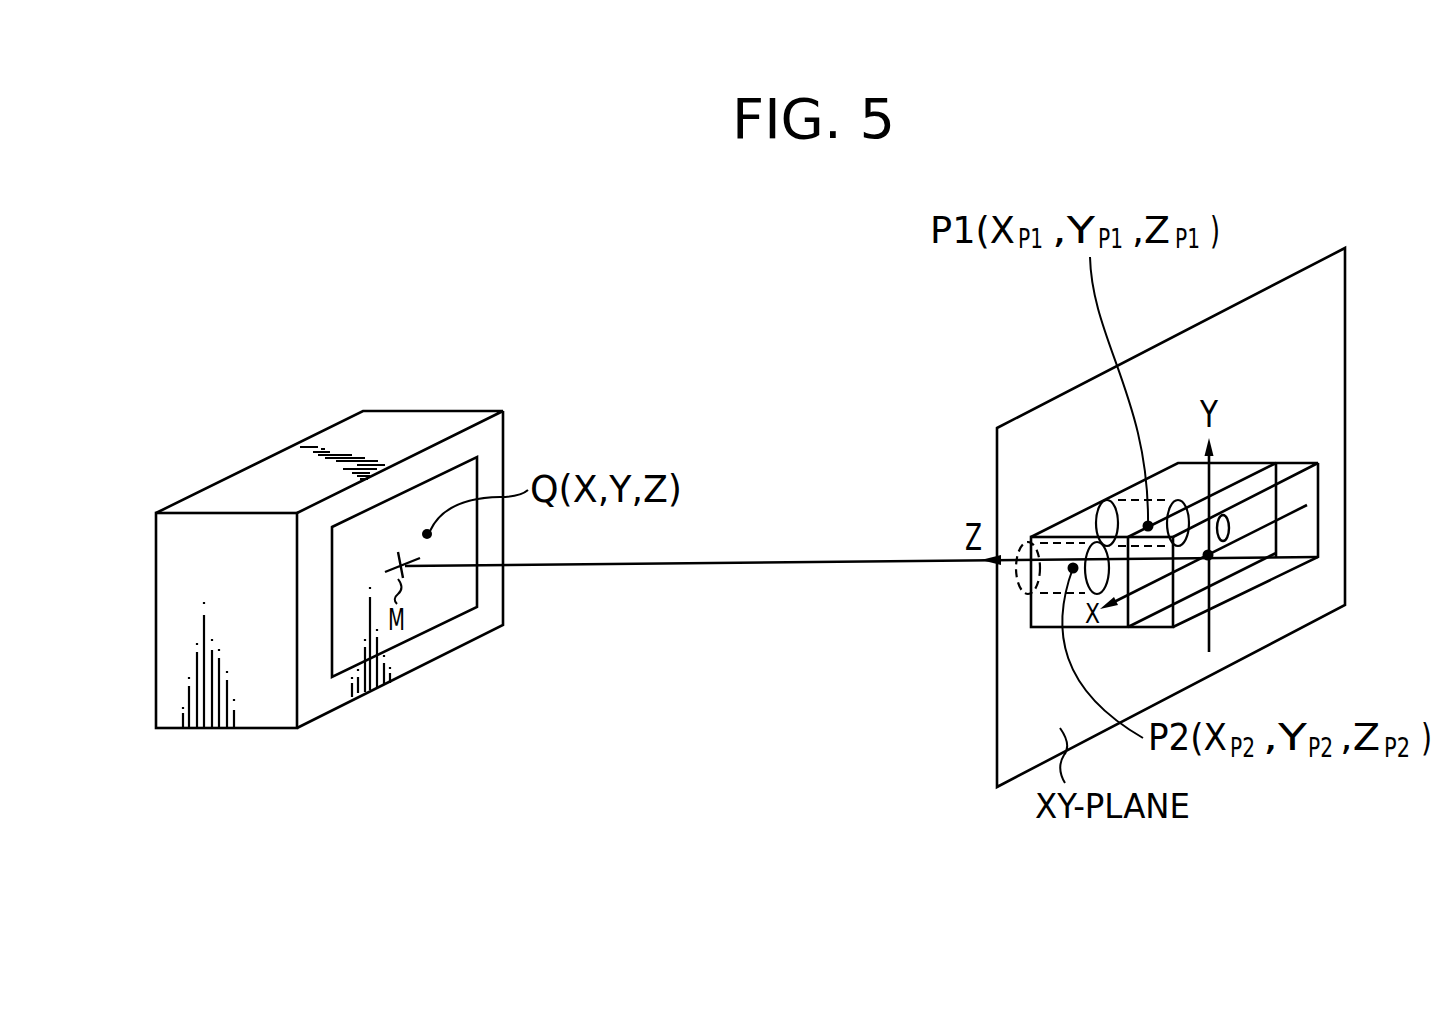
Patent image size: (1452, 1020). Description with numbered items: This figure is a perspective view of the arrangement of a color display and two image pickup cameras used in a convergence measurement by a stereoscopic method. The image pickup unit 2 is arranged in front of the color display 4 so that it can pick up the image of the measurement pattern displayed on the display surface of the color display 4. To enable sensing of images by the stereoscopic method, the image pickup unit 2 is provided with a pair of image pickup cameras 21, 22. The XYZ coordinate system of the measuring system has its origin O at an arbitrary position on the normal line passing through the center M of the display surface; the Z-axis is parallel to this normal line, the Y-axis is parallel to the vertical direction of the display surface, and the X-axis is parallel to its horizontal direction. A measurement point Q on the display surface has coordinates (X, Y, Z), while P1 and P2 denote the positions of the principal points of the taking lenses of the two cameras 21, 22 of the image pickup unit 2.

The image pickup unit 2 is at (1253, 463).
The color display 4 is at (443, 411).
The image pickup camera 21 is at (1091, 536).
The image pickup camera 22 is at (1010, 576).